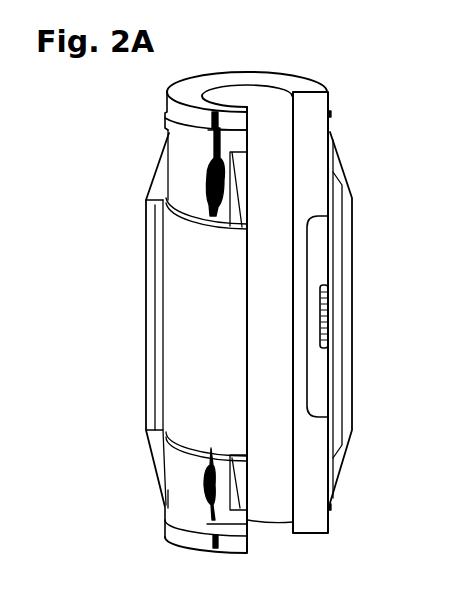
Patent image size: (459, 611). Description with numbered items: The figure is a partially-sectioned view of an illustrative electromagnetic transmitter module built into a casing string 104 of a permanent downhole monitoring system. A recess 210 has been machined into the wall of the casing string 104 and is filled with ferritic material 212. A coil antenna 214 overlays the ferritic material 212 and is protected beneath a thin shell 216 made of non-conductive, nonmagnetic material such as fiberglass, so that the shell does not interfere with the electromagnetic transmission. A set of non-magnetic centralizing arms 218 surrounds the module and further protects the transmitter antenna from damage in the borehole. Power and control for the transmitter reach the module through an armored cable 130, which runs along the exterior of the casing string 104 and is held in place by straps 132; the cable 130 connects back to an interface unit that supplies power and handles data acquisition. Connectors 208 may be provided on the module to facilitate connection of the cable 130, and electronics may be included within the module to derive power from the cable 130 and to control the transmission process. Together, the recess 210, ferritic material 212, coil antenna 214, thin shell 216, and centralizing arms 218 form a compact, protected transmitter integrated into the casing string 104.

The casing string 104 is at (182, 487).
The armored cable 130 is at (212, 117).
The straps 132 is at (331, 117).
The connectors 208 is at (210, 178).
The recess 210 is at (307, 258).
The ferritic material 212 is at (320, 268).
The coil antenna 214 is at (328, 318).
The thin shell 216 is at (174, 219).
The non-magnetic centralizing arms 218 is at (352, 198).